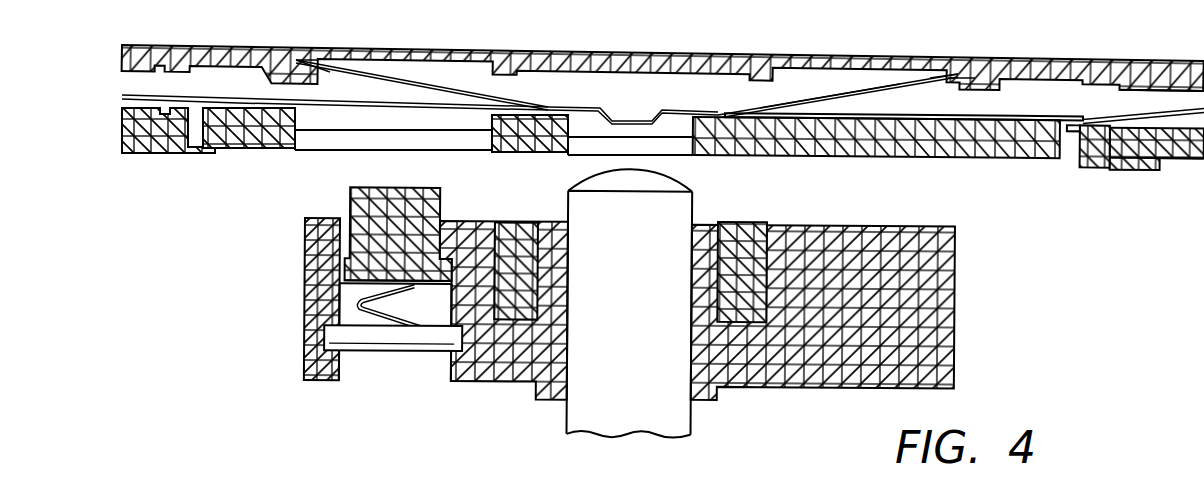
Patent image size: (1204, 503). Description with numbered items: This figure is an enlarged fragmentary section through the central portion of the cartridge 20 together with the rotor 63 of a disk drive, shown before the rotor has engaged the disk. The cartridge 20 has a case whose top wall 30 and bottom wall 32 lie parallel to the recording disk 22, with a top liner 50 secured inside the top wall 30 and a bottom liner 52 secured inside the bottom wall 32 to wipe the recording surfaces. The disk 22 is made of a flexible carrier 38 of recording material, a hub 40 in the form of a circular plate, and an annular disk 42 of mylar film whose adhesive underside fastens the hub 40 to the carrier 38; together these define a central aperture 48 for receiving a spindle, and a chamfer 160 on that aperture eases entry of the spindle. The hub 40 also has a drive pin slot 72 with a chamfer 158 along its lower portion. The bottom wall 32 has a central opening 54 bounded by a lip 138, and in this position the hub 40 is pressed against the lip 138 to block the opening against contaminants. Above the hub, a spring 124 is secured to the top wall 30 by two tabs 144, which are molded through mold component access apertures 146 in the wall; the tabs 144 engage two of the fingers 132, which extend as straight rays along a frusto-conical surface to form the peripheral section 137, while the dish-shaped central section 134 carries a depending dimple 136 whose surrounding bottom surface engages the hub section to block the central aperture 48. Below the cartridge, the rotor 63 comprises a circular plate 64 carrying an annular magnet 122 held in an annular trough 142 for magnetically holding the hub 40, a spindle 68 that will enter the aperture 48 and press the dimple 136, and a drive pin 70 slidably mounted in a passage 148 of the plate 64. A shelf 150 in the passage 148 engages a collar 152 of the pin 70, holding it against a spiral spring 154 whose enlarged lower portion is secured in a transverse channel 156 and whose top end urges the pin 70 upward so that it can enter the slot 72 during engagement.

The cartridge 20 is at (603, 45).
The recording disk 22 is at (263, 158).
The top wall 30 is at (684, 44).
The bottom wall 32 is at (1185, 168).
The carrier 38 is at (1110, 113).
The hub 40 is at (900, 158).
The annular disk 42 is at (1014, 112).
The central aperture 48 is at (683, 150).
The top liner 50 is at (1135, 82).
The bottom liner 52 is at (1164, 108).
The central opening 54 is at (195, 135).
The rotor 63 is at (770, 428).
The circular plate 64 is at (958, 325).
The spindle 68 is at (695, 220).
The drive pin 70 is at (410, 185).
The drive pin slot 72 is at (298, 140).
The annular magnet 122 is at (520, 221).
The spring 124 is at (409, 78).
The fingers 132 is at (856, 90).
The central section 134 is at (577, 108).
The dimple 136 is at (640, 120).
The peripheral section 137 is at (810, 85).
The lip 138 is at (222, 150).
The annular trough 142 is at (760, 243).
The tabs 144 is at (333, 76).
The mold component access apertures 146 is at (313, 58).
The passage 148 is at (347, 378).
The shelf 150 is at (338, 283).
The collar 152 is at (347, 262).
The spring 154 is at (383, 350).
The transverse channel 156 is at (340, 322).
The chamfer 158 is at (362, 140).
The chamfer 160 is at (568, 152).